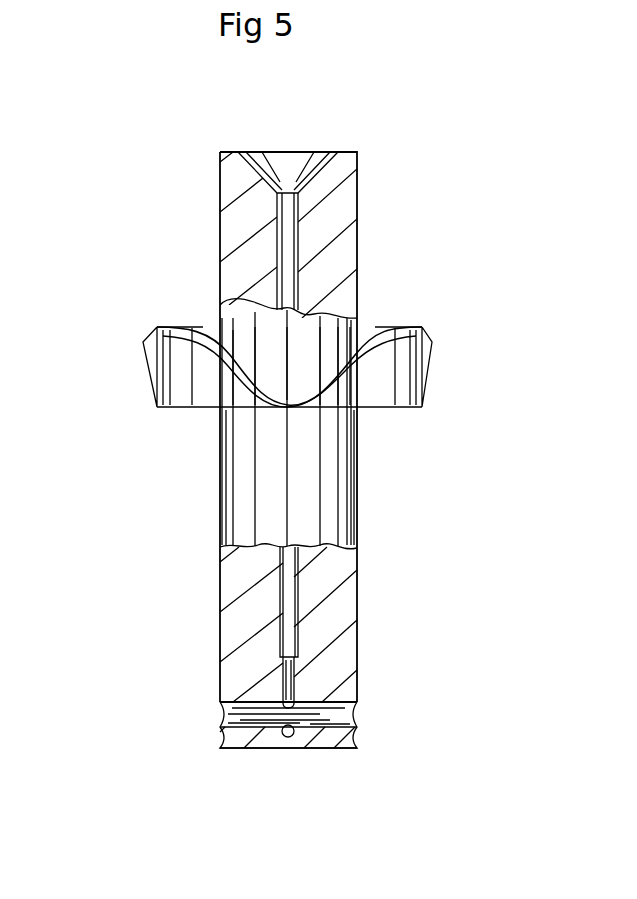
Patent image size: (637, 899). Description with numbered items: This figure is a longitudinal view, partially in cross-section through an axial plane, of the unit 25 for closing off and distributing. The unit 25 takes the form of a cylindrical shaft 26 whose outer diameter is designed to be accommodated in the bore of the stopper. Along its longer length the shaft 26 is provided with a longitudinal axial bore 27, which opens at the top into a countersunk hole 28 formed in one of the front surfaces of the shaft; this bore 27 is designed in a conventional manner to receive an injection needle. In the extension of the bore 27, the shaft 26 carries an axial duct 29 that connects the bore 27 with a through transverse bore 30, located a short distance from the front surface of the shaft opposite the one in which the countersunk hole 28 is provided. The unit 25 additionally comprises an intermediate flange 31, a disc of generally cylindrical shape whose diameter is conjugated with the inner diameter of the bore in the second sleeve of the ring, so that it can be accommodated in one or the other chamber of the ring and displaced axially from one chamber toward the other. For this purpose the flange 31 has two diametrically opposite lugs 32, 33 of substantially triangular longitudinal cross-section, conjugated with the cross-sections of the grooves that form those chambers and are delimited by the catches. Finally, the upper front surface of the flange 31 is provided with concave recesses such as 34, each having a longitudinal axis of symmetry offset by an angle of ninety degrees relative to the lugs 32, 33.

The unit for closing off and distributing 25 is at (372, 270).
The shaft 26 is at (347, 243).
The longitudinal axial bore 27 is at (285, 233).
The countersunk hole 28 is at (292, 163).
The axial duct 29 is at (283, 672).
The through transverse bore 30 is at (318, 733).
The intermediate flange 31 is at (398, 392).
The lug 32 is at (150, 350).
The lug 33 is at (430, 343).
The recess 34 is at (223, 386).